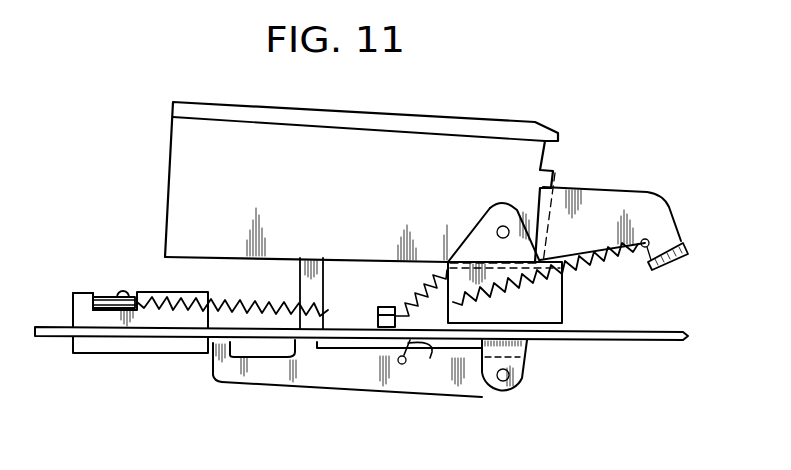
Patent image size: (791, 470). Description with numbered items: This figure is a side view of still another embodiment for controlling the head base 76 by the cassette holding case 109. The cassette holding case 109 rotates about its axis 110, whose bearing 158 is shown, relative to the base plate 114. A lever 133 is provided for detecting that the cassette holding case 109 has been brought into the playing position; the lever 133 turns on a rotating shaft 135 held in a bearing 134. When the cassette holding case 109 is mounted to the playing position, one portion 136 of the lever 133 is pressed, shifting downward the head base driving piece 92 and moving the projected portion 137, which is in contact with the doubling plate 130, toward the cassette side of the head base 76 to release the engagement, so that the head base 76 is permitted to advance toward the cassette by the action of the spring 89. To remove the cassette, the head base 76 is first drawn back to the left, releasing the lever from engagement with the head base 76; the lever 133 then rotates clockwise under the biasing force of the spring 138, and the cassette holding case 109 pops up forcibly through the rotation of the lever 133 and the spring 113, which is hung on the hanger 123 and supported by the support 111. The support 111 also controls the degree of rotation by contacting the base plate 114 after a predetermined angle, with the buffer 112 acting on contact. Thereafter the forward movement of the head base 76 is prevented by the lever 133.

The cassette holding case 109 is at (396, 119).
The axis of the cassette holding case 110 is at (503, 225).
The support of the spring 111 is at (595, 200).
The buffer 112 is at (675, 262).
The spring 113 is at (580, 267).
The base plate 114 is at (607, 340).
The hanger of the spring 123 is at (387, 307).
The doubling plate 130 is at (148, 357).
The lever 133 is at (325, 377).
The bearing 134 is at (527, 348).
The rotating shaft 135 is at (499, 382).
The portion of the lever 136 is at (312, 240).
The projected portion 137 is at (210, 378).
The spring 138 is at (432, 350).
The bearing 158 is at (480, 231).
The spring 89 is at (242, 307).
The head base driving piece 92 is at (83, 292).
The head base 76 is at (108, 298).